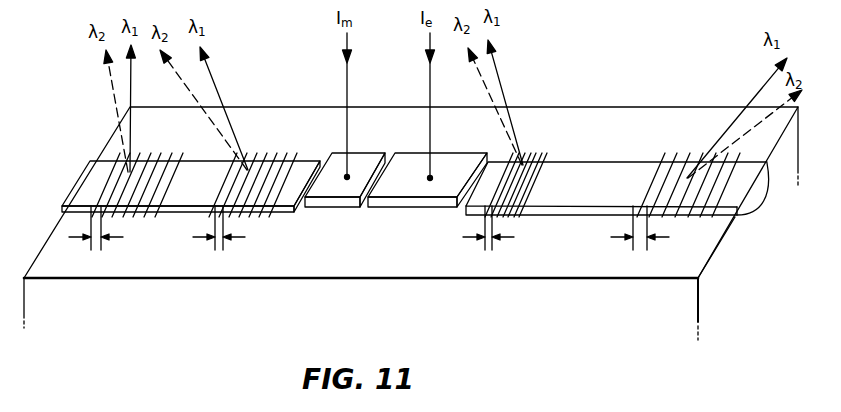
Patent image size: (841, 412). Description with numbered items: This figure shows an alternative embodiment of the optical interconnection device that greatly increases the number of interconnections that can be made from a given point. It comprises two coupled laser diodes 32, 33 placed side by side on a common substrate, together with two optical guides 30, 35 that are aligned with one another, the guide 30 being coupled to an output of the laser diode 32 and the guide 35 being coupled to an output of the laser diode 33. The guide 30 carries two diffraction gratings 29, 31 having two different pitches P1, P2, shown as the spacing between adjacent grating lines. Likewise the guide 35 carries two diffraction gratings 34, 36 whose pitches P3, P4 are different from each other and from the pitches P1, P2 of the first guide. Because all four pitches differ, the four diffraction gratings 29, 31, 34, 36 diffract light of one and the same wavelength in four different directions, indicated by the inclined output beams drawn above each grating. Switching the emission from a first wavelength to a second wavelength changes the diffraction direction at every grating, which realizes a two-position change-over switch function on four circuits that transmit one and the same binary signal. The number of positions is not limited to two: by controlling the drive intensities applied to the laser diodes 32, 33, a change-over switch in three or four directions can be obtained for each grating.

The diffraction grating 29 is at (127, 215).
The optical guide 30 is at (190, 197).
The diffraction grating 31 is at (247, 215).
The laser diode 32 is at (330, 203).
The laser diode 33 is at (422, 203).
The diffraction grating 34 is at (548, 158).
The optical guide 35 is at (576, 197).
The diffraction grating 36 is at (677, 215).
The pitch P1 is at (96, 239).
The pitch P2 is at (219, 239).
The pitch P3 is at (488, 239).
The pitch P4 is at (640, 239).